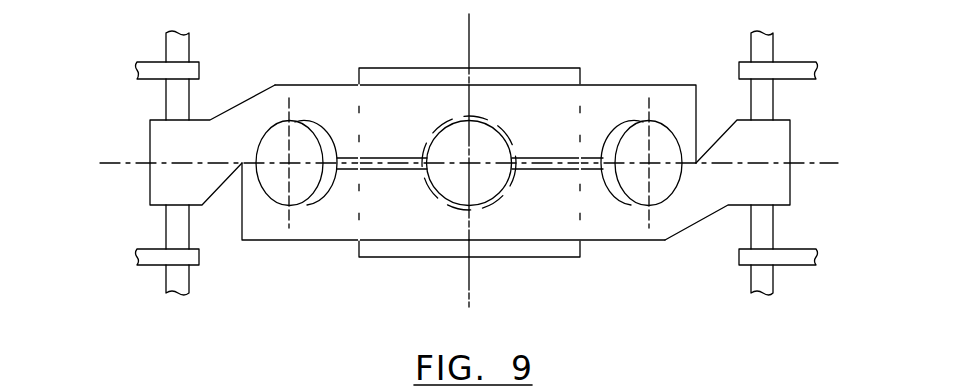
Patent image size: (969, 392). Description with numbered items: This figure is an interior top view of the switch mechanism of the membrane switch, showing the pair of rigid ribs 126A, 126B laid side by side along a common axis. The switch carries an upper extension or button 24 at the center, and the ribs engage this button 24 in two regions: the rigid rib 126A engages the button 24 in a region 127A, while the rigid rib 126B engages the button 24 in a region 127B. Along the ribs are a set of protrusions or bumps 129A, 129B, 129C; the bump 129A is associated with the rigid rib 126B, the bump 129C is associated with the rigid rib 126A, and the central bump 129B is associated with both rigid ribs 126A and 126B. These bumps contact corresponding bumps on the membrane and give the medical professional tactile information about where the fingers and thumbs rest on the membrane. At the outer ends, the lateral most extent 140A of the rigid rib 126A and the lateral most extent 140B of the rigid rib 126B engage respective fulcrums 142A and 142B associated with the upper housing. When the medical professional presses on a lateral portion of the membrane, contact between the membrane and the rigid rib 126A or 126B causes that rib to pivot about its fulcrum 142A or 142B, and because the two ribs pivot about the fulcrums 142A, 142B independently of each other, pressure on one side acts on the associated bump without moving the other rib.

The button 24 is at (458, 195).
The rigid rib 126A is at (243, 124).
The rigid rib 126B is at (633, 217).
The region 127A is at (488, 145).
The region 127B is at (483, 180).
The bump 129A is at (280, 143).
The bump 129B is at (452, 147).
The bump 129C is at (657, 143).
The lateral most extent 140A is at (167, 180).
The lateral most extent 140B is at (775, 192).
The fulcrum 142A is at (170, 93).
The fulcrum 142B is at (768, 102).